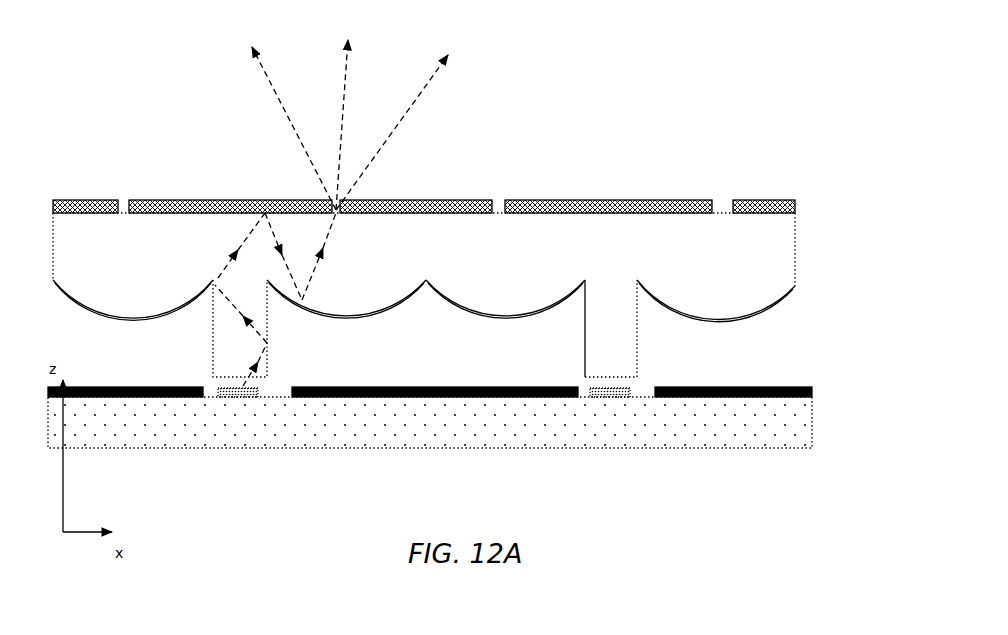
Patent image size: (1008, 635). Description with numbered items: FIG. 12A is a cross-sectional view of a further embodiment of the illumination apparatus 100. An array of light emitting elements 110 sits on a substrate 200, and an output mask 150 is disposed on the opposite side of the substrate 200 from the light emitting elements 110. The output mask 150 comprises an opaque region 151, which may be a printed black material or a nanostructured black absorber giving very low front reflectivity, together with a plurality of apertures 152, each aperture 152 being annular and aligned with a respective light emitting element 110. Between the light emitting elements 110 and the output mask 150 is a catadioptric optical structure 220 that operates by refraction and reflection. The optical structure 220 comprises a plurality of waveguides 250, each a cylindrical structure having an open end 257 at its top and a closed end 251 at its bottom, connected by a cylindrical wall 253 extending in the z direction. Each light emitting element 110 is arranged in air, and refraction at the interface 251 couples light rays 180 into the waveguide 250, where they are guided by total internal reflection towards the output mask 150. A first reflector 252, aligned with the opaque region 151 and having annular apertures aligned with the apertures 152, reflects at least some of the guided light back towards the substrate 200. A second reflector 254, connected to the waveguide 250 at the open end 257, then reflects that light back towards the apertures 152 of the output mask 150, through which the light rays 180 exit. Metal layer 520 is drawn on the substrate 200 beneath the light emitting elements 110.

The illumination apparatus 100 is at (748, 148).
The light emitting element 110 is at (240, 392).
The output mask 150 is at (453, 144).
The opaque region 151 is at (608, 200).
The aperture 152 is at (121, 200).
The light ray 180 is at (218, 278).
The substrate 200 is at (812, 420).
The optical structure 220 is at (464, 292).
The waveguide 250 is at (598, 322).
The closed end 251 is at (608, 378).
The first reflector 252 is at (652, 213).
The cylindrical wall 253 is at (637, 362).
The second reflector 254 is at (770, 305).
The open end 257 is at (597, 280).
The metal layer 520 is at (375, 398).